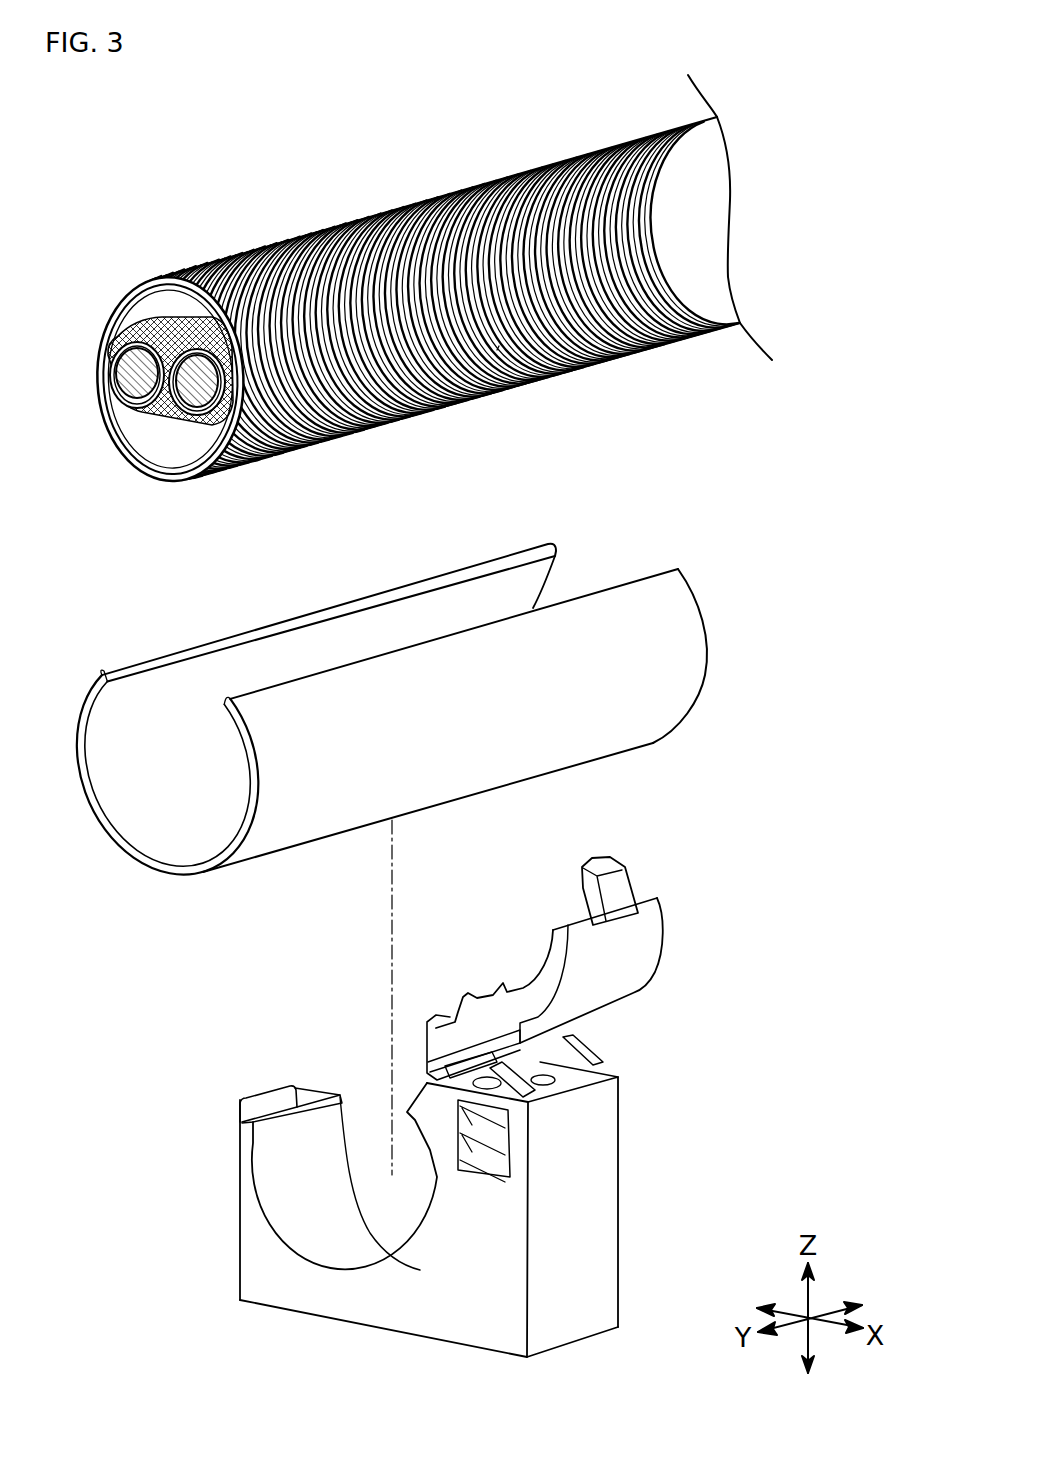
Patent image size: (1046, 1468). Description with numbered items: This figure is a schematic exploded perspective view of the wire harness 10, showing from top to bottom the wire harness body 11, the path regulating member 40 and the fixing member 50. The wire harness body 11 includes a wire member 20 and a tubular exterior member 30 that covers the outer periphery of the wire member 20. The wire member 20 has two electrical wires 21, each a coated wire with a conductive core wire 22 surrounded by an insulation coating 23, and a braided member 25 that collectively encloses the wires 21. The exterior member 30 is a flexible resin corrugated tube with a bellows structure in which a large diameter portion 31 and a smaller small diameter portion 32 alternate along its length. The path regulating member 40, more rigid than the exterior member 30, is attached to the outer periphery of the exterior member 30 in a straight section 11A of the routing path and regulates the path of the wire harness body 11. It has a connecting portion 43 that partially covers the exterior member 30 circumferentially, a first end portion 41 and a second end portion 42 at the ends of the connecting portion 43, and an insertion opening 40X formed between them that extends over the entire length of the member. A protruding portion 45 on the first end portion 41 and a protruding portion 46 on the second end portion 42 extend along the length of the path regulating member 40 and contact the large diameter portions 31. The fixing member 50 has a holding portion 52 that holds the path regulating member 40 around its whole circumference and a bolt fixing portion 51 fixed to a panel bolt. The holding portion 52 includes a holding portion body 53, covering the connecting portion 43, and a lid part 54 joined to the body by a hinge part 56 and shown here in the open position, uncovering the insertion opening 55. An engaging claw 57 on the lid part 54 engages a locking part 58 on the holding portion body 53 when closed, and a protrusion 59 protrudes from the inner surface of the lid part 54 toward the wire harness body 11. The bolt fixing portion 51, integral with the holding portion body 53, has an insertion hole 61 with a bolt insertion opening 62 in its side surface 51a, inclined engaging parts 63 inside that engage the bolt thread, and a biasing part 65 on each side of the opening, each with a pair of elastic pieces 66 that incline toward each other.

The wire harness 10 is at (100, 193).
The wire harness body 11 is at (630, 355).
The straight section 11A is at (497, 350).
The wire member 20 is at (226, 210).
The electrical wire 21 is at (158, 325).
The core wire 22 is at (108, 395).
The insulation coating 23 is at (137, 417).
The braided member 25 is at (186, 330).
The exterior member 30 is at (547, 160).
The large diameter portion 31 is at (450, 213).
The small diameter portion 32 is at (493, 227).
The path regulating member 40 is at (687, 722).
The insertion opening 40X is at (413, 637).
The first end portion 41 is at (478, 568).
The second end portion 42 is at (622, 582).
The connecting portion 43 is at (140, 860).
The protruding portion 45 is at (122, 680).
The protruding portion 46 is at (232, 707).
The fixing member 50 is at (602, 1337).
The bolt fixing portion 51 is at (612, 1167).
The side surface 51a is at (613, 1060).
The holding portion 52 is at (308, 1313).
The holding portion body 53 is at (270, 1278).
The lid part 54 is at (650, 937).
The insertion opening 55 is at (312, 1123).
The hinge part 56 is at (423, 1070).
The engaging claw 57 is at (600, 855).
The locking part 58 is at (275, 1100).
The protrusion 59 is at (470, 992).
The insertion hole 61 is at (487, 1173).
The bolt insertion opening 62 is at (572, 1087).
The engaging part 63 is at (465, 1160).
The biasing part 65 is at (597, 1048).
The elastic piece 66 is at (580, 1043).